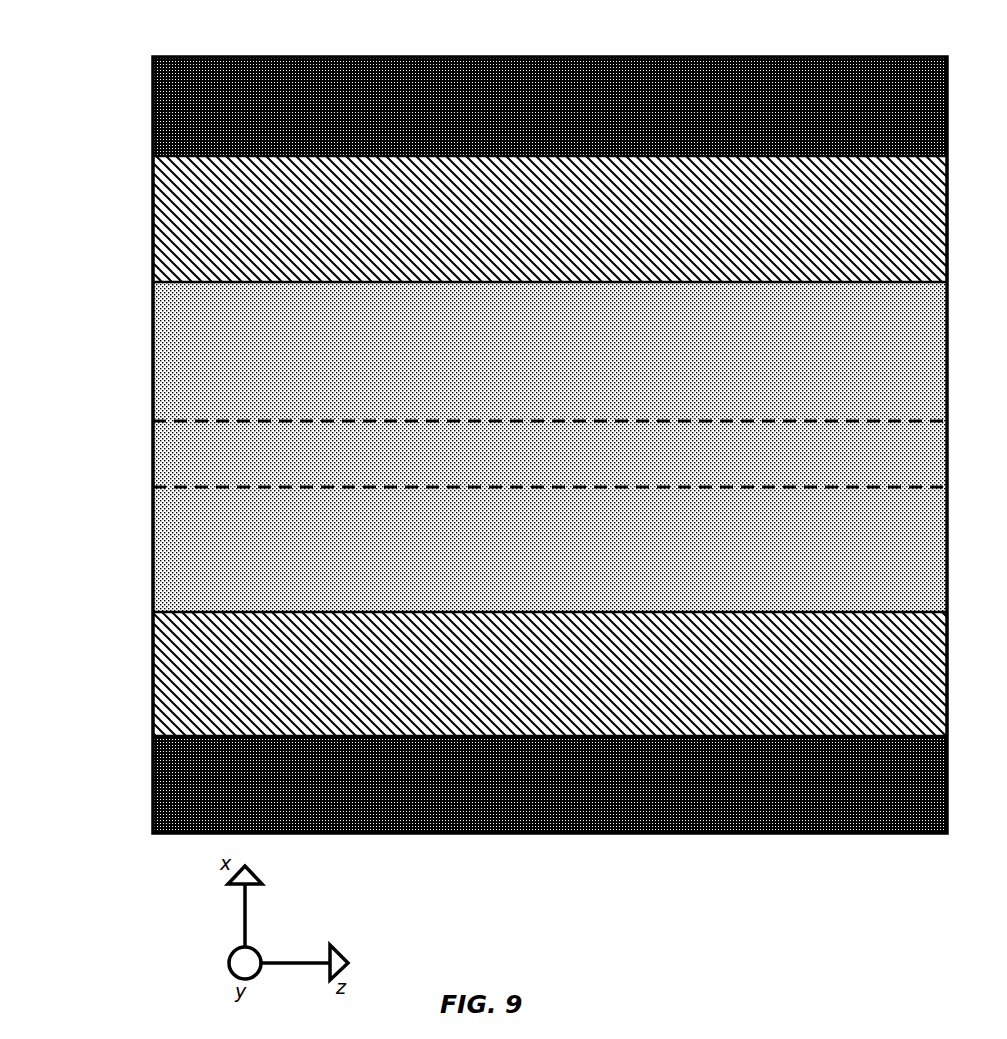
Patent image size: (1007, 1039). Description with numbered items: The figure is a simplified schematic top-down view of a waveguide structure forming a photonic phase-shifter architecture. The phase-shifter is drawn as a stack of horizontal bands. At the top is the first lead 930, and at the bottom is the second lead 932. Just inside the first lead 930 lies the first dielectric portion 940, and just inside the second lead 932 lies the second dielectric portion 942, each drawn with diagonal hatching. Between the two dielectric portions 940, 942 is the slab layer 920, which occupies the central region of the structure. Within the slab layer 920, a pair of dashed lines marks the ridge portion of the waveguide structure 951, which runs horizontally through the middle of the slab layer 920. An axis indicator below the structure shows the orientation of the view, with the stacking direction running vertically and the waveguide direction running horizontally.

The first lead 930 is at (153, 117).
The first dielectric portion 940 is at (153, 225).
The slab layer 920 is at (153, 367).
The ridge portion of the waveguide structure 951 is at (153, 452).
The second dielectric portion 942 is at (153, 677).
The second lead 932 is at (153, 790).